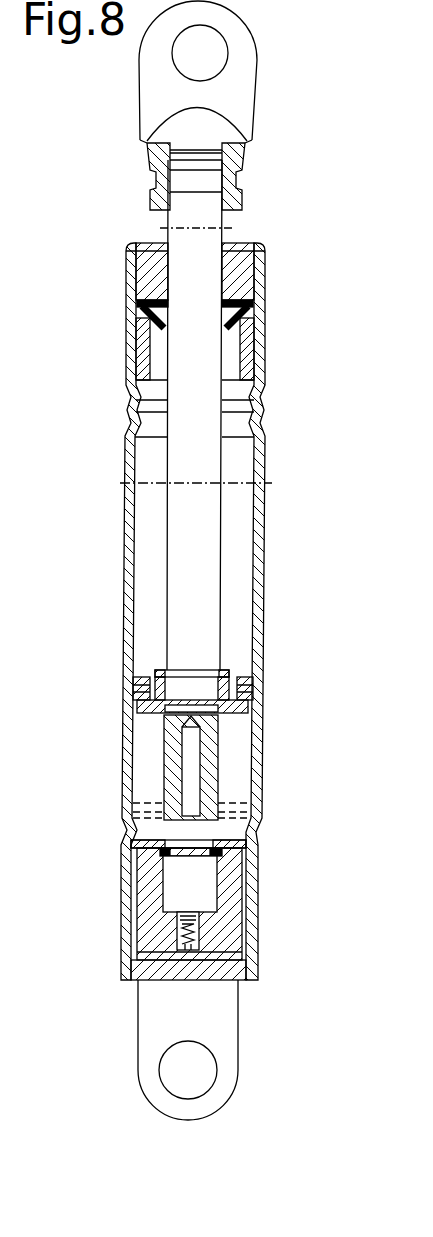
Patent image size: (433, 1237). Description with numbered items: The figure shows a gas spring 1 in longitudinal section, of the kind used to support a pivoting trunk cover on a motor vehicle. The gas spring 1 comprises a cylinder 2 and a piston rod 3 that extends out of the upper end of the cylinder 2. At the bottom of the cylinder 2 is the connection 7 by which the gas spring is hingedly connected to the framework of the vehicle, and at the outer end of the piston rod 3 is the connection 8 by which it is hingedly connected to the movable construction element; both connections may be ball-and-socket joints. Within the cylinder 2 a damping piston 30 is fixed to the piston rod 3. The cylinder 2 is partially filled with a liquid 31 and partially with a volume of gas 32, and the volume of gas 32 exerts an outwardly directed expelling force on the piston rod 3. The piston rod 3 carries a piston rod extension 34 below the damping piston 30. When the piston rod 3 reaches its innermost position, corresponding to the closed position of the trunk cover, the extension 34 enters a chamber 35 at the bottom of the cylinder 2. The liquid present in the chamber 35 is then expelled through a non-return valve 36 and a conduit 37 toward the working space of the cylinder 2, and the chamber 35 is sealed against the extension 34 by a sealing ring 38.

The gas spring 1 is at (278, 463).
The cylinder 2 is at (258, 578).
The piston rod 3 is at (183, 558).
The hinged connection 7 is at (207, 1065).
The hinged connection 8 is at (219, 59).
The damping piston 30 is at (240, 673).
The liquid 31 is at (246, 812).
The volume of gas 32 is at (236, 540).
The piston rod extension 34 is at (163, 771).
The chamber 35 is at (214, 883).
The non-return valve 36 is at (200, 930).
The conduit 37 is at (245, 905).
The sealing ring 38 is at (250, 858).